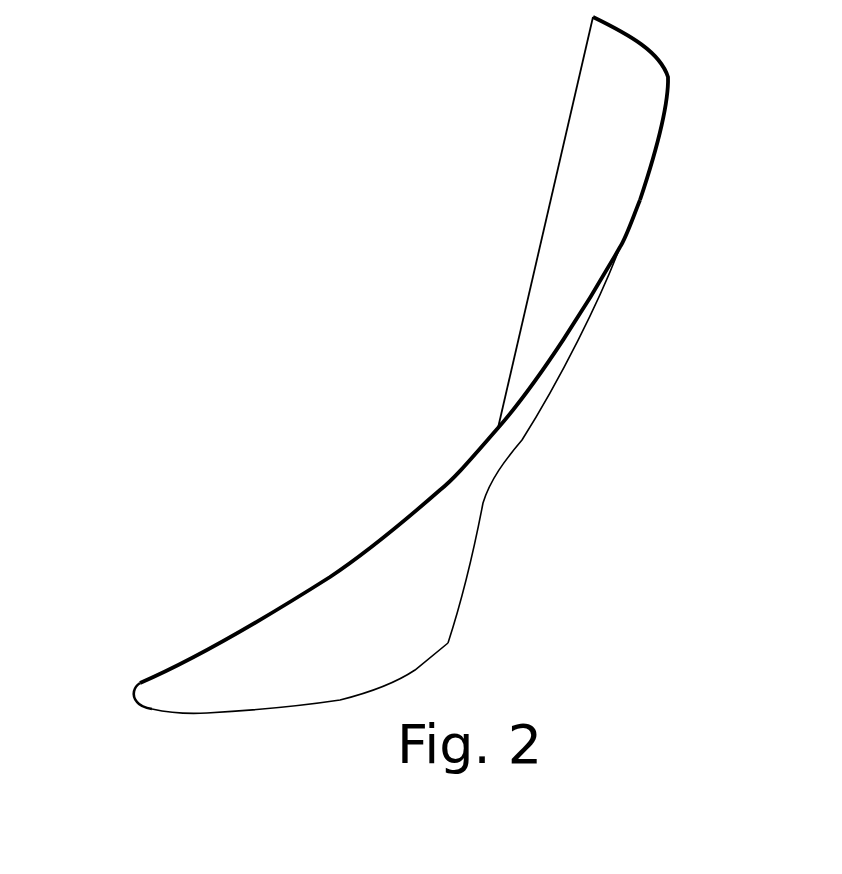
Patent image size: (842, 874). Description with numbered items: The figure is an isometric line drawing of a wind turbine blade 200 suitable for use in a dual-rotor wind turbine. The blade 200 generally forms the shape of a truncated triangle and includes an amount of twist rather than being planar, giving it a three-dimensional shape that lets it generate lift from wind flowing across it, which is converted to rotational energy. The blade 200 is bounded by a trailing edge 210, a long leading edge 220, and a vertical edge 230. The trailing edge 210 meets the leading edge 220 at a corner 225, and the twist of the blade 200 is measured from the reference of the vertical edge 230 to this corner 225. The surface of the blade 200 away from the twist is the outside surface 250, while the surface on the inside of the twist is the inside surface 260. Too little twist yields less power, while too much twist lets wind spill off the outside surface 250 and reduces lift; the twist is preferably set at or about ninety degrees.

The blade 200 is at (288, 197).
The trailing edge 210 is at (307, 707).
The leading edge 220 is at (443, 483).
The corner 225 is at (134, 697).
The vertical edge 230 is at (558, 170).
The outside surface 250 is at (443, 575).
The inside surface 260 is at (550, 308).